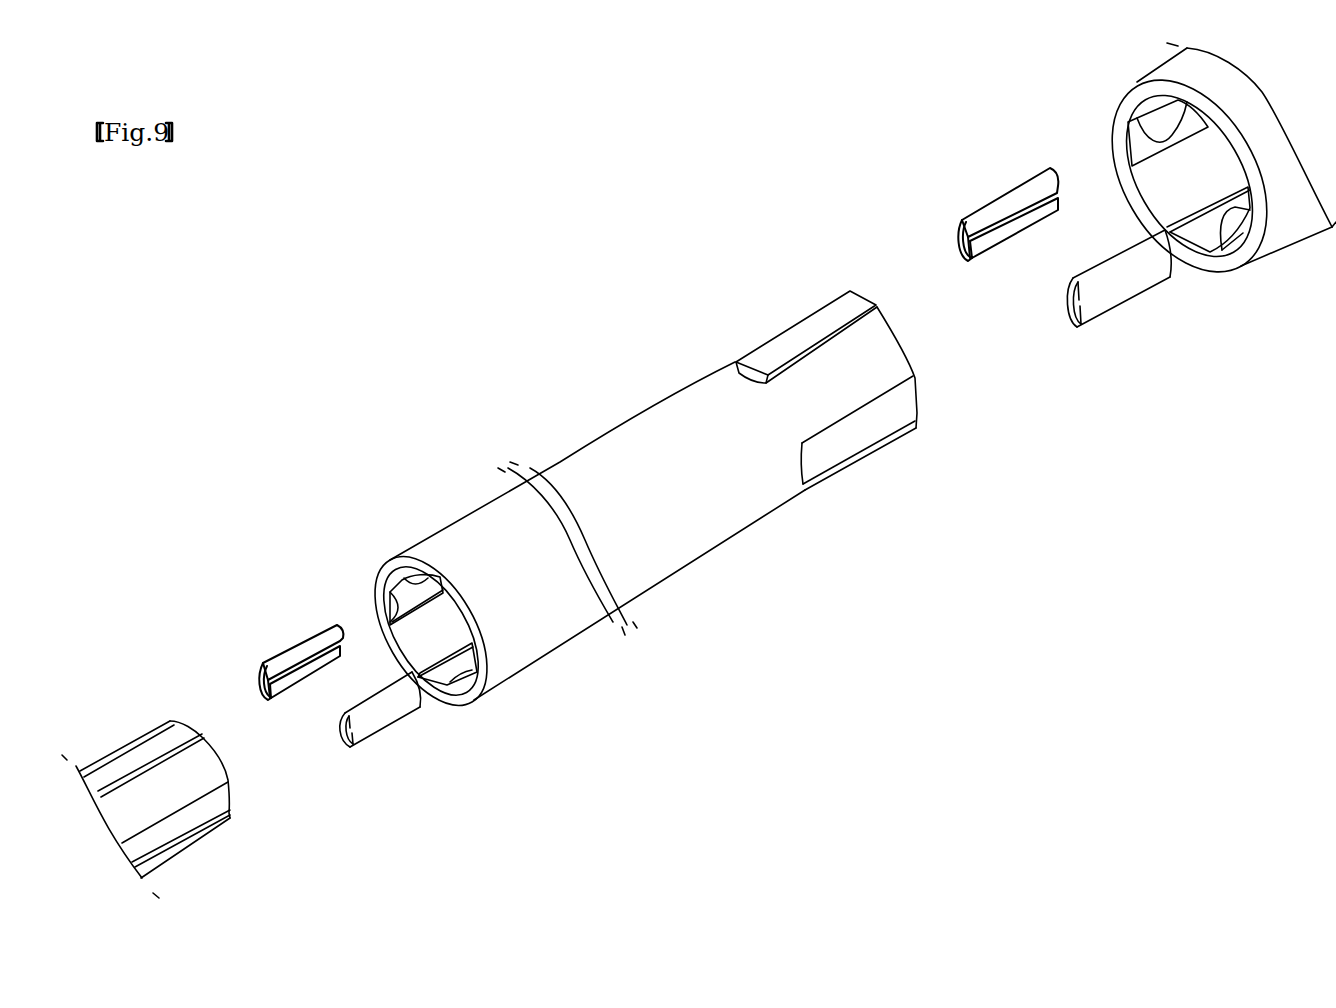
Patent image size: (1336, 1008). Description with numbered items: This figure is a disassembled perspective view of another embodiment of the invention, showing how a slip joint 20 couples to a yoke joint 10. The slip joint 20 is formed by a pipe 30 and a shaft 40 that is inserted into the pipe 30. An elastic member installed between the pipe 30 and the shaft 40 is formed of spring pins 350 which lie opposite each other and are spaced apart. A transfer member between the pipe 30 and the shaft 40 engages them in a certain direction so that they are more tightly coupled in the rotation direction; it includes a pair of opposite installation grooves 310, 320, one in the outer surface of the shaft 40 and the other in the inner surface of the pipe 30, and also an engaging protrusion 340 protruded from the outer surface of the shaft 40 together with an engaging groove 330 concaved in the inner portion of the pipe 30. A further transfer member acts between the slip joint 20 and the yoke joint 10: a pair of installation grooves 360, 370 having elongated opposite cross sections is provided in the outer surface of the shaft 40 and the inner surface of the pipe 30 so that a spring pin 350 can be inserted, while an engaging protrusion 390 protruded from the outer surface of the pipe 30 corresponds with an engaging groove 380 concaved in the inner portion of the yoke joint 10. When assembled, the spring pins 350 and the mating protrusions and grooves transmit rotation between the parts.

The yoke joint 10 is at (1193, 208).
The slip joint 20 is at (616, 519).
The pipe 30 is at (627, 545).
The shaft 40 is at (616, 564).
The installation groove 310 is at (393, 600).
The installation groove 320 is at (190, 812).
The engaging groove 330 is at (410, 573).
The engaging protrusion 340 is at (127, 755).
The spring pin 350 is at (297, 633).
The installation groove 360 is at (1222, 213).
The installation groove 370 is at (820, 452).
The engaging groove 380 is at (1150, 147).
The engaging protrusion 390 is at (793, 350).